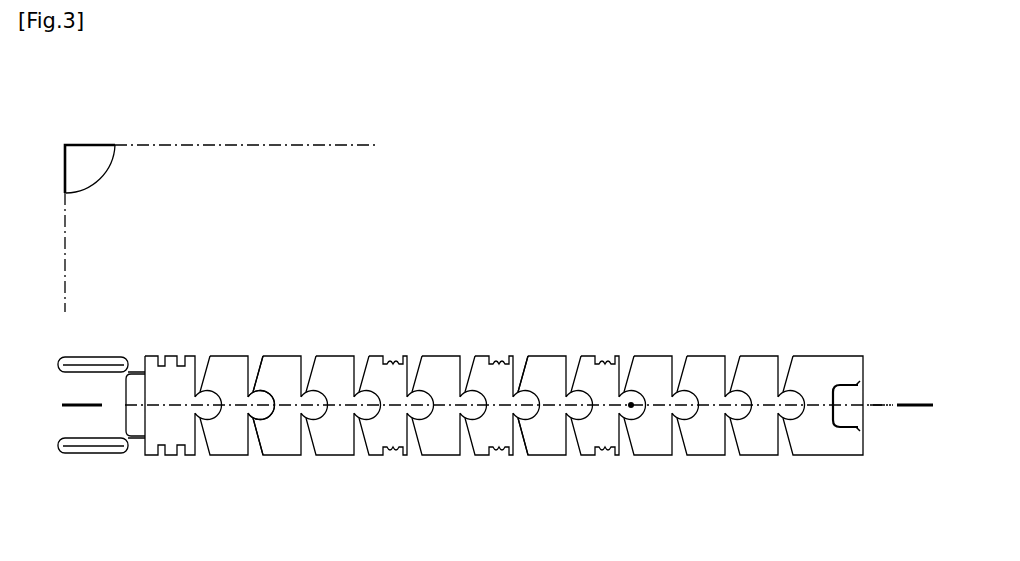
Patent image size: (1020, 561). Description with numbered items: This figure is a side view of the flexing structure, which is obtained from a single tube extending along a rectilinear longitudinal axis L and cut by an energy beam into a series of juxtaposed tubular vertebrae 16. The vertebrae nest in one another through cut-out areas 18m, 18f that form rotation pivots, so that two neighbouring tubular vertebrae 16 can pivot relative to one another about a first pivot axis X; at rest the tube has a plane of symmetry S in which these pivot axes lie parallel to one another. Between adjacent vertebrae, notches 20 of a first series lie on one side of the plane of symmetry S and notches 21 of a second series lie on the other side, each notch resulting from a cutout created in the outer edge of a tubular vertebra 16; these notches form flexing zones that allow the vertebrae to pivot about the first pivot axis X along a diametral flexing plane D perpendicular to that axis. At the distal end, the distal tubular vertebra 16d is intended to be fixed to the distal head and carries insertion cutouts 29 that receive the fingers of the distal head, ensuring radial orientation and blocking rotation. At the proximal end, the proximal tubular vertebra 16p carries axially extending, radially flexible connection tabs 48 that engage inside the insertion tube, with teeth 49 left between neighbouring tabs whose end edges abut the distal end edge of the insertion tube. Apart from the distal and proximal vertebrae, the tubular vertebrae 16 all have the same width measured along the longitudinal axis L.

The tubular vertebrae 16 is at (226, 370).
The proximal tubular vertebra 16p is at (168, 372).
The distal tubular vertebra 16d is at (803, 378).
The cut-out area of the second series 18m is at (267, 412).
The cut-out area of the second series 18f is at (279, 396).
The notches of the first series 20 is at (521, 352).
The notches of the second series 21 is at (521, 459).
The insertion cutouts 29 is at (845, 430).
The connection tabs 48 is at (58, 369).
The teeth 49 is at (126, 392).
The first pivot axis X is at (633, 404).
The diametral flexing plane D is at (221, 228).
The plane of symmetry S is at (912, 403).
The longitudinal axis L is at (883, 409).